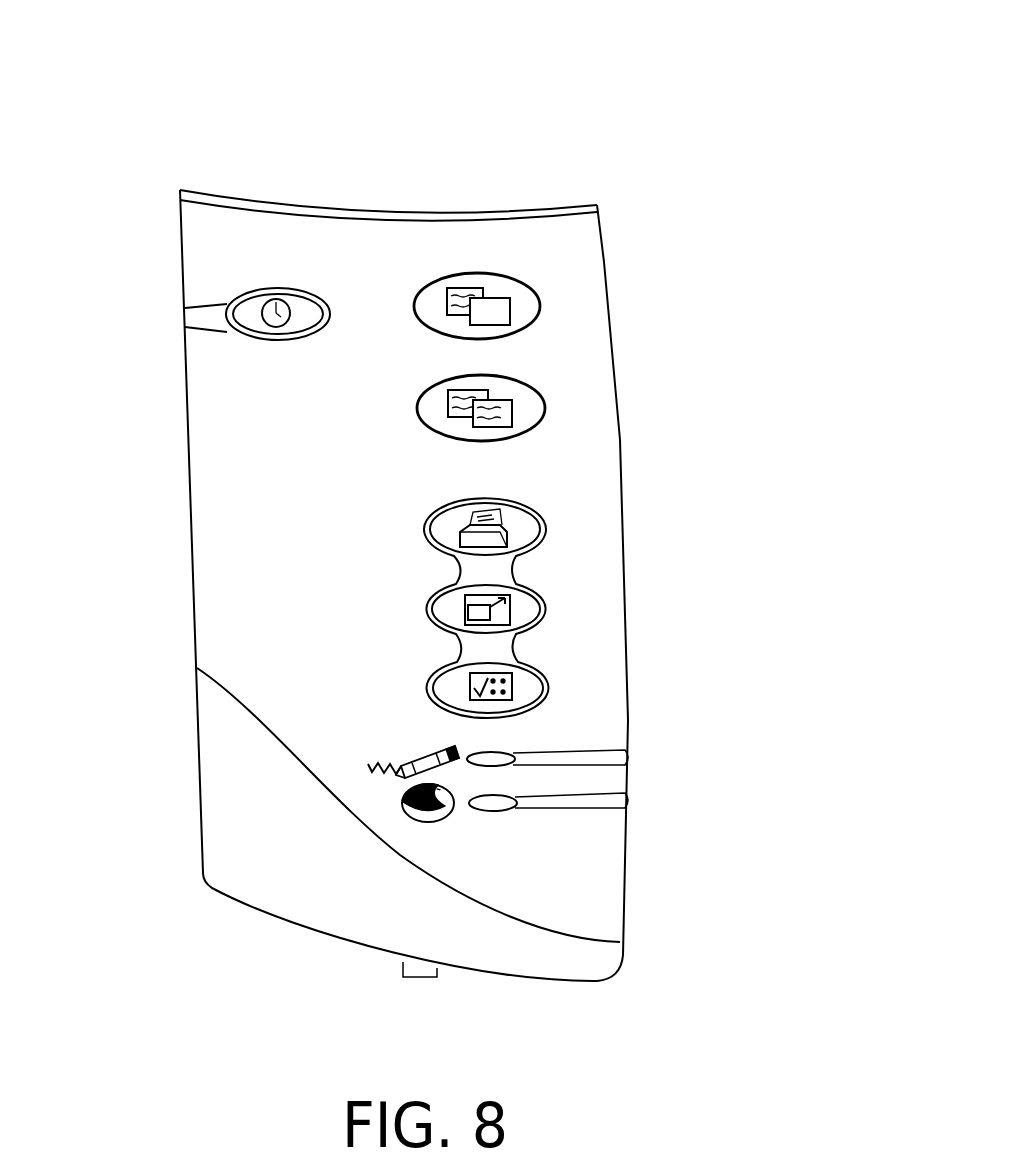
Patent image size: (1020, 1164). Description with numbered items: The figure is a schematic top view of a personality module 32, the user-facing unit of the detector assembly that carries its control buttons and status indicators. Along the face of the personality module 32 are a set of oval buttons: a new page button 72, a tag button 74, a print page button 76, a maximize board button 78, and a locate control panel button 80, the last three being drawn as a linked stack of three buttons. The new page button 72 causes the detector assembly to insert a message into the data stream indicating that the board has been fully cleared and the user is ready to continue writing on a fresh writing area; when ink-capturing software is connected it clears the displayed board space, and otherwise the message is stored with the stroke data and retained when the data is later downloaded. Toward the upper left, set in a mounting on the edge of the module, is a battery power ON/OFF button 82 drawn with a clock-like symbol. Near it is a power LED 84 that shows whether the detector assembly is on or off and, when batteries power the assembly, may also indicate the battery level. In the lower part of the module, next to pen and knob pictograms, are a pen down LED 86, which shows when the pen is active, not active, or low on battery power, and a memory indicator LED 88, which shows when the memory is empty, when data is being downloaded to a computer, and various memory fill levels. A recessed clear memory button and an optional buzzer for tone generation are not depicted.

The personality module 32 is at (613, 149).
The new page button 72 is at (540, 300).
The tag button 74 is at (545, 405).
The print page button 76 is at (546, 522).
The maximize board button 78 is at (546, 607).
The locate control panel button 80 is at (549, 690).
The battery power ON/OFF button 82 is at (253, 290).
The power LED 84 is at (253, 343).
The pen down LED 86 is at (510, 752).
The memory indicator LED 88 is at (503, 812).